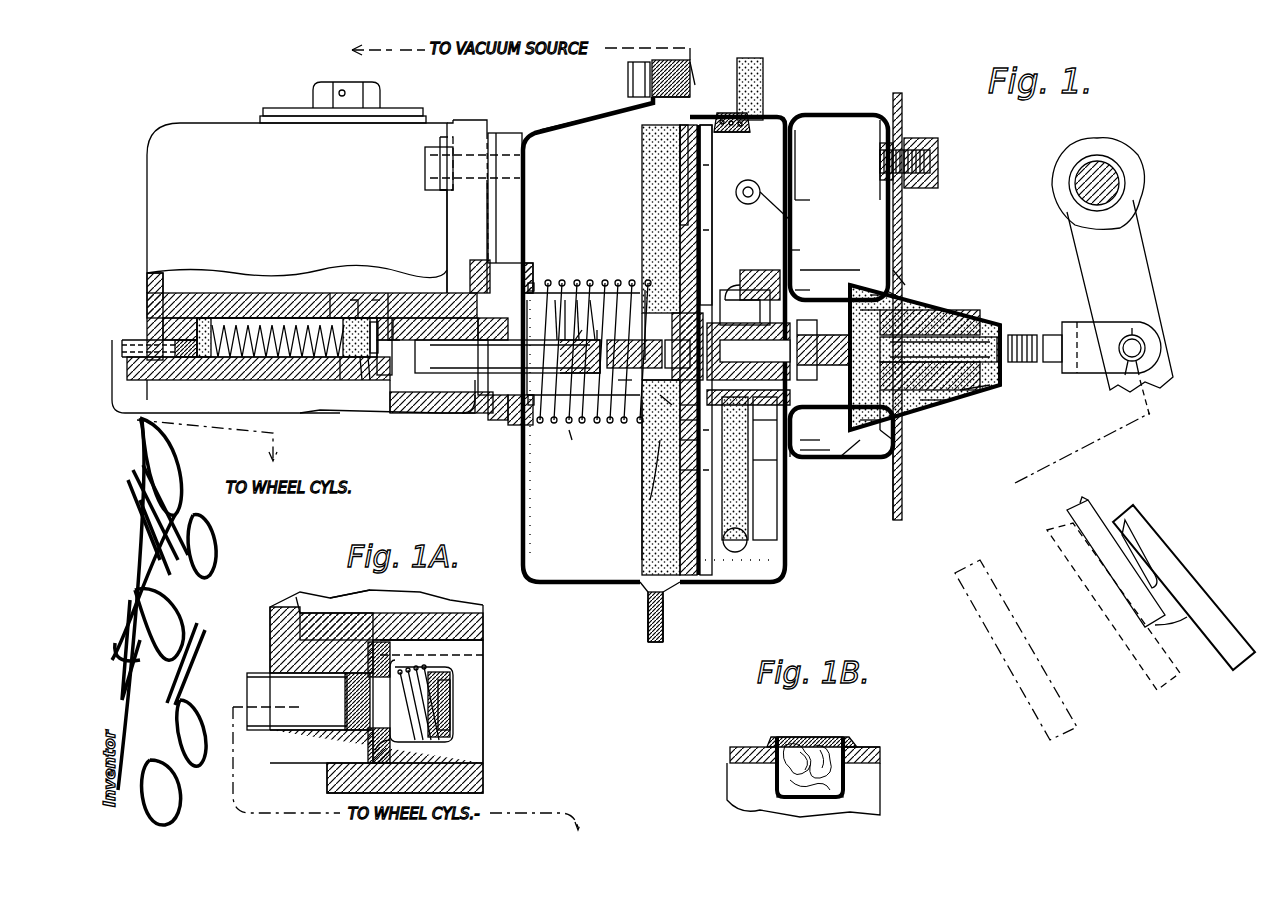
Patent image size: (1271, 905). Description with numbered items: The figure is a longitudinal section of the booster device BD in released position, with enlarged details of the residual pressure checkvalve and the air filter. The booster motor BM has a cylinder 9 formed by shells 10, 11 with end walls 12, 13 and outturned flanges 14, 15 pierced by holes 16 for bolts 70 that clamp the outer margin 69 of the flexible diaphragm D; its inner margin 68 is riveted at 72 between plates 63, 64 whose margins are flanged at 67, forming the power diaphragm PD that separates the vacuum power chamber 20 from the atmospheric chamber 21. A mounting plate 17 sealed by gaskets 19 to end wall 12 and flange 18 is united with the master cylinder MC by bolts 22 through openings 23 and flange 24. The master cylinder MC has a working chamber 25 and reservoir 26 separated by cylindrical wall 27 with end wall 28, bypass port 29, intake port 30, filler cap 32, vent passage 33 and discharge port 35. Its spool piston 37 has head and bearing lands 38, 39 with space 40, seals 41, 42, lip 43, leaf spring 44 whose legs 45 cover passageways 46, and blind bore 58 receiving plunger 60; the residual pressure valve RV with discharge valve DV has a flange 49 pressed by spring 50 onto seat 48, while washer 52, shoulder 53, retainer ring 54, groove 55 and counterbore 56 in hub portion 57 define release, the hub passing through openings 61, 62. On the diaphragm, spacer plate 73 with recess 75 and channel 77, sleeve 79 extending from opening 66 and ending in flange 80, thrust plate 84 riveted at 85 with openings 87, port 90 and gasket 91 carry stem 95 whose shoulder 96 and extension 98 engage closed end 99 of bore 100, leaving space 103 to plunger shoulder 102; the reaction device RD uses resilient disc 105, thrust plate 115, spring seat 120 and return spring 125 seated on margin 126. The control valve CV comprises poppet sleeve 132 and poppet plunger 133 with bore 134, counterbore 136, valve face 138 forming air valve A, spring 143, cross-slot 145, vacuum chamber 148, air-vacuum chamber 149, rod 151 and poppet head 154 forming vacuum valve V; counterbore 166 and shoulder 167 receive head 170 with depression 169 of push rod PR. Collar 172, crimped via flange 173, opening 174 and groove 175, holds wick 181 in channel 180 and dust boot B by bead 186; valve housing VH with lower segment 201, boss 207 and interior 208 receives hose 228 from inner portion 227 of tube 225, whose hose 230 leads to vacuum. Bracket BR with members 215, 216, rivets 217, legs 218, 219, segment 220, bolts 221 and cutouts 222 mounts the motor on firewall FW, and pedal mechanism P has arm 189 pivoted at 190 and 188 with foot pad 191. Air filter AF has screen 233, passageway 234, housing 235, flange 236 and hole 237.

In FIG. 1, the cylinder 9 is at (630, 615).
In FIG. 1, the cup-shaped casing or shell 10 is at (540, 582).
In FIG. 1, the cup-shaped casing or shell 11 is at (782, 580).
In FIG. 1B, the cup-shaped casing or shell 11 is at (752, 747).
In FIG. 1, the end wall 12 is at (523, 538).
In FIG. 1, the end wall 13 is at (786, 568).
In FIG. 1, the outturned annular flange 14 is at (648, 635).
In FIG. 1, the outturned annular flange 15 is at (665, 635).
In FIG. 1, the registering holes 16 is at (628, 75).
In FIG. 1, the forward mounting plate 17 is at (505, 135).
In FIG. 1, the mounting flange 18 is at (492, 418).
In FIG. 1, the flat gaskets 19 is at (512, 425).
In FIG. 1, the variable pressure vacuum power chamber 20 is at (580, 554).
In FIG. 1, the constant pressure atmospheric chamber 21 is at (757, 572).
In FIG. 1B, the constant pressure atmospheric chamber 21 is at (878, 795).
In FIG. 1, the bolts 22 is at (425, 178).
In FIG. 1, the registering openings 23 is at (470, 130).
In FIG. 1, the flange 24 is at (463, 130).
In FIG. 1, the pressure-working chamber 25 is at (265, 318).
In FIG. 1A, the pressure-working chamber 25 is at (484, 655).
In FIG. 1, the fluid supply reservoir 26 is at (328, 246).
In FIG. 1A, the fluid supply reservoir 26 is at (340, 596).
In FIG. 1, the cylindrical wall 27 is at (294, 318).
In FIG. 1A, the cylindrical wall 27 is at (484, 636).
In FIG. 1, the end wall 28 is at (168, 293).
In FIG. 1A, the end wall 28 is at (298, 596).
In FIG. 1, the compensating or bypass port 29 is at (338, 310).
In FIG. 1, the intake port 30 is at (392, 300).
In FIG. 1, the removable filler cap 32 is at (315, 84).
In FIG. 1, the vent passage 33 is at (339, 93).
In FIG. 1, the discharge port 35 is at (125, 340).
In FIG. 1A, the discharge port 35 is at (262, 690).
In FIG. 1, the spool-type piston 37 is at (415, 300).
In FIG. 1, the head land 38 is at (383, 380).
In FIG. 1, the bearing land 39 is at (470, 413).
In FIG. 1, the ring-like space 40 is at (420, 395).
In FIG. 1, the cup-shaped pliant seal 41 is at (360, 380).
In FIG. 1, the ring-like pliant seal 42 is at (462, 318).
In FIG. 1, the seal lip 43 is at (340, 380).
In FIG. 1, the star-shaped leaf spring 44 is at (356, 300).
In FIG. 1, the legs 45 is at (370, 380).
In FIG. 1, the passageways 46 is at (384, 300).
In FIG. 1, the ring-type valve seat 48 is at (215, 320).
In FIG. 1A, the ring-type valve seat 48 is at (378, 642).
In FIG. 1, the annular flange 49 is at (215, 360).
In FIG. 1A, the annular flange 49 is at (375, 750).
In FIG. 1, the compression spring 50 is at (292, 357).
In FIG. 1A, the compression spring 50 is at (420, 665).
In FIG. 1, the backing washer 52 is at (545, 283).
In FIG. 1, the internal annular shoulder 53 is at (528, 450).
In FIG. 1, the split retainer ring 54 is at (533, 430).
In FIG. 1, the internal annular groove 55 is at (536, 410).
In FIG. 1, the counterbore 56 is at (575, 283).
In FIG. 1, the hub portion 57 is at (562, 283).
In FIG. 1, the blind end longitudinal bore 58 is at (452, 413).
In FIG. 1, the work performing element or plunger 60 is at (440, 318).
In FIG. 1, the circular opening 61 is at (486, 400).
In FIG. 1, the circular opening 62 is at (533, 263).
In FIG. 1, the cup-shaped plate 63 is at (684, 152).
In FIG. 1, the cup-shaped plate 64 is at (708, 166).
In FIG. 1, the circular opening 66 is at (660, 480).
In FIG. 1, the flanged peripheral marginal portions 67 is at (700, 150).
In FIG. 1, the inner circular marginal portion 68 is at (660, 167).
In FIG. 1, the outer circular marginal portion 69 is at (660, 60).
In FIG. 1, the bolts 70 is at (652, 85).
In FIG. 1, the rivets 72 is at (650, 540).
In FIG. 1, the circular spacer plate 73 is at (680, 450).
In FIG. 1, the circular recess 75 is at (680, 420).
In FIG. 1, the air-vacuum channel 77 is at (640, 283).
In FIG. 1, the tubular extension or sleeve 79 is at (745, 270).
In FIG. 1, the inturned annular flange 80 is at (765, 468).
In FIG. 1, the thrust plate 84 is at (650, 470).
In FIG. 1, the rivets 85 is at (680, 430).
In FIG. 1, the diametrically opposed openings 87 is at (650, 420).
In FIG. 1, the air-vacuum port 90 is at (647, 280).
In FIG. 1, the flat gasket 91 is at (680, 460).
In FIG. 1, the pilot member or stem 95 is at (640, 362).
In FIG. 1, the annular flange or shoulder 96 is at (682, 346).
In FIG. 1, the reduced extension 98 is at (580, 375).
In FIG. 1, the closed end 99 is at (602, 375).
In FIG. 1, the axial blind bore 100 is at (600, 420).
In FIG. 1, the annular flange or shoulder 102 is at (592, 300).
In FIG. 1, the space 103 is at (507, 356).
In FIG. 1, the resilient metallic diaphragm or disc 105 is at (595, 280).
In FIG. 1, the circular thrust plate 115 is at (767, 471).
In FIG. 1, the cup-shaped spring seat 120 is at (640, 290).
In FIG. 1, the compression spring 125 is at (578, 440).
In FIG. 1, the marginal portion 126 is at (475, 270).
In FIG. 1, the poppet sleeve 132 is at (965, 298).
In FIG. 1, the poppet plunger 133 is at (824, 350).
In FIG. 1, the axial bore 134 is at (865, 436).
In FIG. 1, the secondary counterbore 136 is at (740, 285).
In FIG. 1, the angular valve face 138 is at (795, 460).
In FIG. 1, the compression spring 143 is at (767, 436).
In FIG. 1, the cross-slot 145 is at (840, 300).
In FIG. 1, the vacuum chamber 148 is at (823, 426).
In FIG. 1, the variable air-vacuum chamber 149 is at (740, 290).
In FIG. 1, the cylindrical rod 151 is at (925, 357).
In FIG. 1, the poppet head 154 is at (749, 351).
In FIG. 1, the coaxial counterbore 166 is at (975, 395).
In FIG. 1, the internal annular shoulder 167 is at (900, 395).
In FIG. 1, the depression 169 is at (938, 350).
In FIG. 1, the head 170 is at (950, 405).
In FIG. 1, the collar 172 is at (900, 290).
In FIG. 1, the outturned circular flange 173 is at (855, 300).
In FIG. 1, the central opening 174 is at (800, 290).
In FIG. 1, the external annular groove 175 is at (868, 300).
In FIG. 1, the internal annular channel 180 is at (855, 457).
In FIG. 1, the oil wick 181 is at (878, 300).
In FIG. 1, the annular bead 186 is at (900, 450).
In FIG. 1, the pivotal connection 188 is at (1142, 345).
In FIG. 1, the pedal arm 189 is at (1150, 290).
In FIG. 1, the pivot 190 is at (1110, 183).
In FIG. 1, the foot pad 191 is at (1160, 545).
In FIG. 1, the lower semicircular segment 201 is at (823, 442).
In FIG. 1, the hollow boss 207 is at (790, 240).
In FIG. 1, the interior of boss 208 is at (820, 300).
In FIG. 1, the upper U-shaped member 215 is at (812, 115).
In FIG. 1, the lower U-shaped member 216 is at (893, 490).
In FIG. 1, the rivets 217 is at (815, 164).
In FIG. 1, the front legs 218 is at (795, 180).
In FIG. 1, the rear legs 219 is at (884, 270).
In FIG. 1, the horizontal segment 220 is at (875, 125).
In FIG. 1, the bolts 221 is at (938, 152).
In FIG. 1, the arcuate cutouts 222 is at (900, 280).
In FIG. 1, the vacuum-inlet tube or fitting 225 is at (754, 180).
In FIG. 1, the inner projecting portion 227 is at (762, 193).
In FIG. 1, the flexible conduit or hose 228 is at (748, 505).
In FIG. 1, the flexible conduit or hose 230 is at (763, 78).
In FIG. 1B, the filter screen 233 is at (810, 737).
In FIG. 1B, the inlet passageway 234 is at (846, 737).
In FIG. 1B, the cylindrical housing 235 is at (777, 775).
In FIG. 1B, the intermediate flange 236 is at (858, 740).
In FIG. 1, the hole 237 is at (745, 132).
In FIG. 1B, the hole 237 is at (880, 750).
In FIG. 1, the air valve A is at (640, 390).
In FIG. 1, the air filter AF is at (730, 98).
In FIG. 1B, the air filter AF is at (800, 729).
In FIG. 1, the dust boot B is at (948, 281).
In FIG. 1, the booster device BD is at (589, 105).
In FIG. 1, the booster motor BM is at (521, 496).
In FIG. 1, the bracket BR is at (863, 117).
In FIG. 1, the control valve mechanism CV is at (830, 260).
In FIG. 1, the flexible power diaphragm D is at (688, 125).
In FIG. 1A, the one-way pressure discharge valve DV is at (462, 704).
In FIG. 1, the firewall FW is at (912, 110).
In FIG. 1, the hydraulic master cylinder MC is at (352, 424).
In FIG. 1A, the hydraulic master cylinder MC is at (283, 630).
In FIG. 1, the pedal mechanism P is at (1133, 400).
In FIG. 1, the power diaphragm assembly PD is at (634, 188).
In FIG. 1, the push rod PR is at (1054, 324).
In FIG. 1, the reaction device RD is at (636, 437).
In FIG. 1, the residual pressure valve RV is at (225, 360).
In FIG. 1A, the residual pressure valve RV is at (464, 727).
In FIG. 1, the vacuum valve V is at (748, 404).
In FIG. 1, the valve housing VH is at (762, 270).